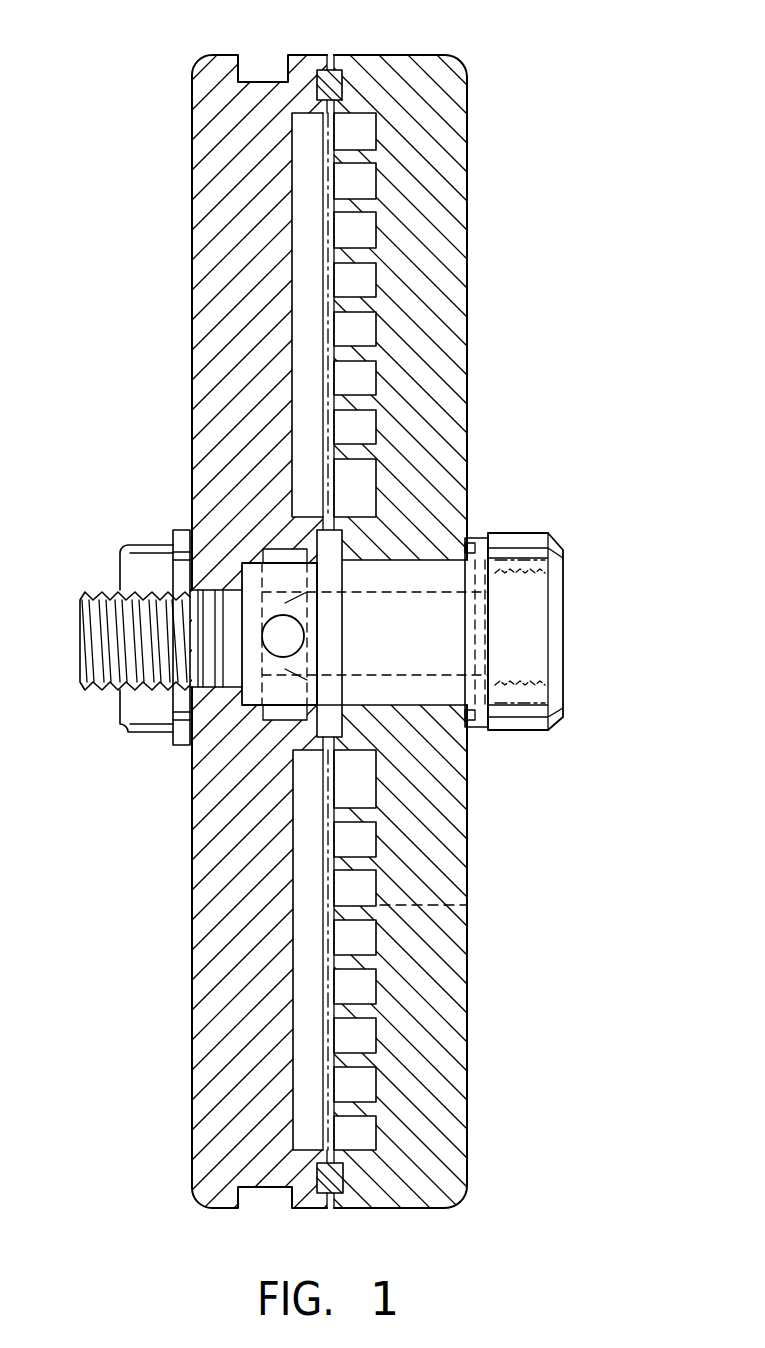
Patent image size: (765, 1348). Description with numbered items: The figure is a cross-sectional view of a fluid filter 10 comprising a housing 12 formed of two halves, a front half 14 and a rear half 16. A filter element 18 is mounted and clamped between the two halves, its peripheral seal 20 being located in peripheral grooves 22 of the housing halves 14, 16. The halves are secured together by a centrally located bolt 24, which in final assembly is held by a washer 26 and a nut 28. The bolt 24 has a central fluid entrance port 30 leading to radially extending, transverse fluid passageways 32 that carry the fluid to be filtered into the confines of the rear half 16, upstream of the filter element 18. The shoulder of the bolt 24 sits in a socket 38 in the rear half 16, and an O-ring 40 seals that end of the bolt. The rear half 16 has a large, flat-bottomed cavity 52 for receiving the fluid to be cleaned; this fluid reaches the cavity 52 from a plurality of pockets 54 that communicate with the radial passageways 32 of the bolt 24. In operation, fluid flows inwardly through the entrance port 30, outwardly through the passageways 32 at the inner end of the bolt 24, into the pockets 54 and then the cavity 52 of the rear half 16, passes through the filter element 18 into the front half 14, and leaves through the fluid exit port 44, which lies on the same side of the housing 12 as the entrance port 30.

The fluid filter 10 is at (382, 672).
The housing 12 is at (382, 672).
The front half 14 is at (467, 342).
The rear half 16 is at (190, 290).
The filter element 18 is at (323, 175).
The peripheral seal 20 is at (325, 70).
The peripheral grooves 22 is at (343, 84).
The bolt 24 is at (508, 534).
The washer 26 is at (182, 743).
The nut 28 is at (132, 543).
The fluid entrance port 30 is at (537, 617).
The transverse fluid passageways 32 is at (278, 570).
The socket 38 is at (240, 692).
The O-ring 40 is at (220, 590).
The fluid exit port 44 is at (443, 957).
The cavity 52 is at (307, 333).
The pockets 54 is at (285, 725).